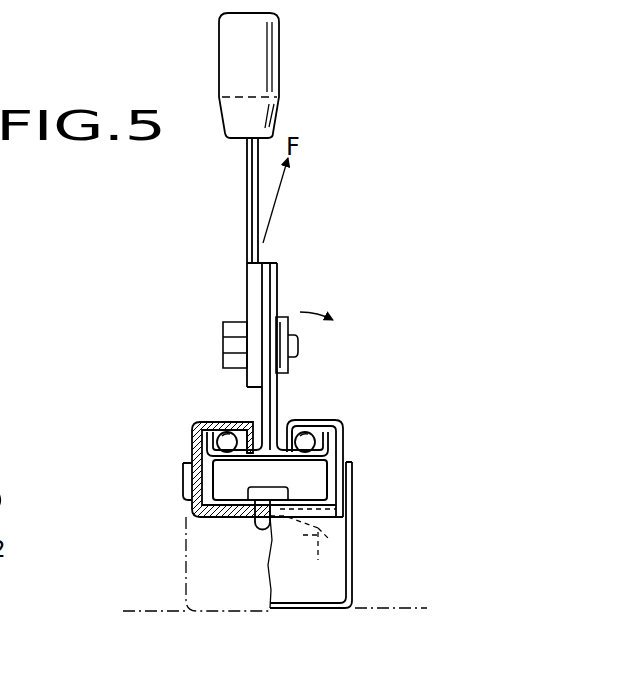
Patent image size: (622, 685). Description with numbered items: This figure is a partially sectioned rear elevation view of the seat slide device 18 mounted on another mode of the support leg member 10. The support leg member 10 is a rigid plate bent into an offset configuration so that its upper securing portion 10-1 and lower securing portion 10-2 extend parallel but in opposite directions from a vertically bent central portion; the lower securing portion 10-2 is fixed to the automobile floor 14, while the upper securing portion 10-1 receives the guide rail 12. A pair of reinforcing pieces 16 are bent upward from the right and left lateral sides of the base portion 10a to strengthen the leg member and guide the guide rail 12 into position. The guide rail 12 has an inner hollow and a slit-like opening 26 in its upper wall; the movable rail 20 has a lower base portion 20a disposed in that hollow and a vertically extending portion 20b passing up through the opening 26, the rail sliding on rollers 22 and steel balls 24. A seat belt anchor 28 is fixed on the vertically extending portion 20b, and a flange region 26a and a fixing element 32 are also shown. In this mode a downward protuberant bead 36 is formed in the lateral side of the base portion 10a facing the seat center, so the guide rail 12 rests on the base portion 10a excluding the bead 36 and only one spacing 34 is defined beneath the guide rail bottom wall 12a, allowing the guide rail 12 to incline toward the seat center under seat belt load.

The support leg member 10 is at (283, 536).
The upper securing portion 10-1 is at (182, 496).
The lower securing portion 10-2 is at (356, 587).
The base portion 10a is at (218, 512).
The guide rail 12 is at (349, 439).
The guide rail bottom wall 12a is at (322, 508).
The floor 14 is at (145, 610).
The reinforcing pieces 16 is at (187, 477).
The seat slide device 18 is at (261, 399).
The movable rail 20 is at (260, 397).
The lower base portion 20a is at (322, 450).
The vertically extending portion 20b is at (276, 274).
The rollers 22 is at (185, 468).
The steel balls 24 is at (210, 440).
The slit-like opening 26 is at (293, 412).
The hook 26a is at (243, 407).
The seat belt anchor 28 is at (277, 57).
The bracket 32 is at (260, 530).
The inclinable means 34 is at (313, 519).
The downward protuberant bead 36 is at (313, 556).